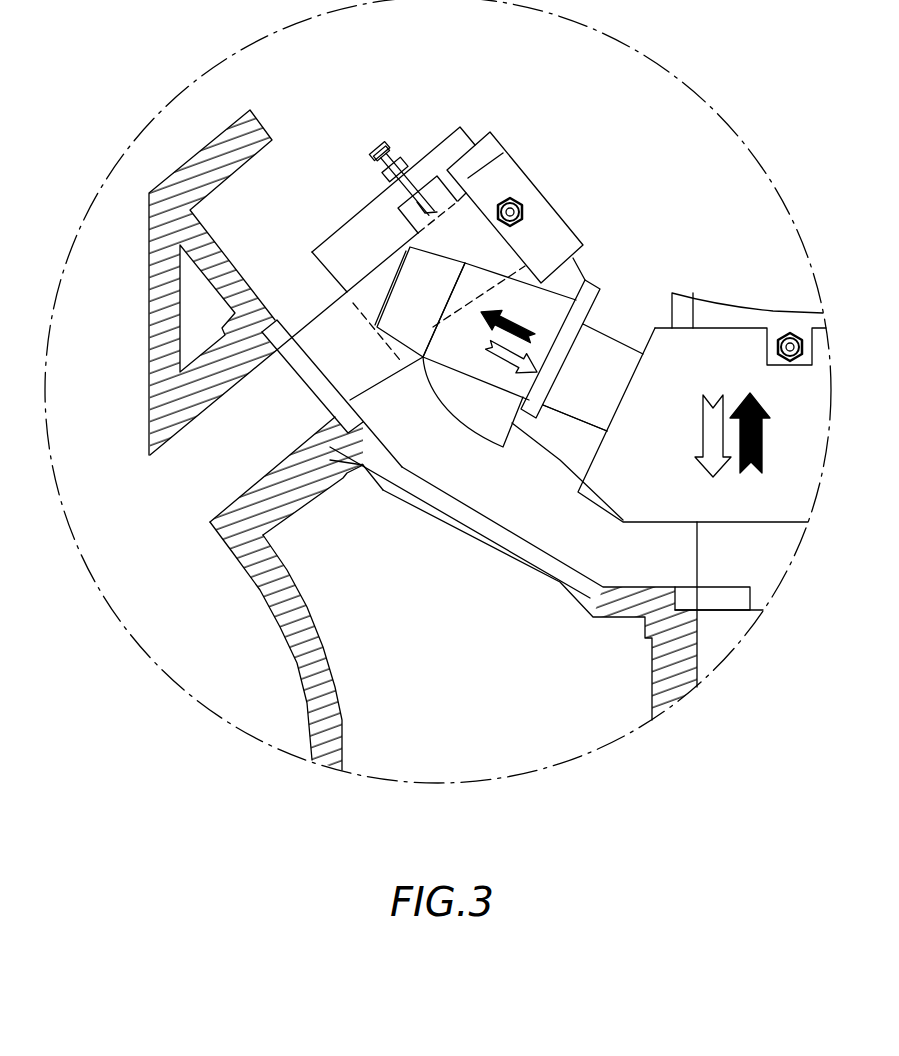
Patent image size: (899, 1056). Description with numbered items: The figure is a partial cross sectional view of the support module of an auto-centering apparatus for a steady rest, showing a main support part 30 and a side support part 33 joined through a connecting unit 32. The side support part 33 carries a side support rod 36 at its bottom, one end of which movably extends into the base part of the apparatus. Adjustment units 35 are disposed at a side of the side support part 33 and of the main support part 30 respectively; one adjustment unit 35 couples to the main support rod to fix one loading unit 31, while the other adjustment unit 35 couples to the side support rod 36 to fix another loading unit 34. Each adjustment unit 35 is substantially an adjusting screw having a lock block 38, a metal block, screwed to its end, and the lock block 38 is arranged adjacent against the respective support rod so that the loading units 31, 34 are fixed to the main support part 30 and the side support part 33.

The main support part 30 is at (648, 498).
The loading unit 31 is at (705, 313).
The connecting unit 32 is at (598, 347).
The side support part 33 is at (375, 223).
The loading unit 34 is at (512, 165).
The adjustment unit 35 is at (376, 140).
The side support rod 36 is at (195, 478).
The lock block 38 is at (438, 192).